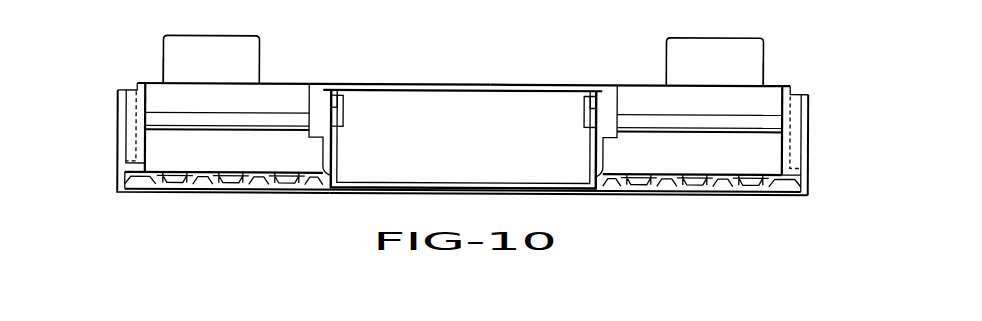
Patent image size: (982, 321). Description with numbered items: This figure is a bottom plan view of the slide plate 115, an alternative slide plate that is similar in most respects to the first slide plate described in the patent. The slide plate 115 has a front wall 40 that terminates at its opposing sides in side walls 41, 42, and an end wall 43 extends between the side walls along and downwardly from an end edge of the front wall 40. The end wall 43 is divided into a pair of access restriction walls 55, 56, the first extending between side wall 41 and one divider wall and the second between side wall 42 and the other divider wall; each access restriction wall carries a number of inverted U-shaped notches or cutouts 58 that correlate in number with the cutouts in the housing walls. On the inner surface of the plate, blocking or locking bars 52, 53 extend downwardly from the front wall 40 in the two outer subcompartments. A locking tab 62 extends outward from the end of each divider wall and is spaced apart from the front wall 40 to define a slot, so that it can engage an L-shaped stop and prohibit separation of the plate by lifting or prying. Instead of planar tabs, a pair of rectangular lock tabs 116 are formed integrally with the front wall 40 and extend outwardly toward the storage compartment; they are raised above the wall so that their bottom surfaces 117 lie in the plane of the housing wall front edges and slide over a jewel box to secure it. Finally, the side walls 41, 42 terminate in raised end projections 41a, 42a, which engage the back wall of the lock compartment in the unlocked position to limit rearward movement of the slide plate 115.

The front wall 40 is at (548, 170).
The side wall 41 is at (118, 143).
The raised end projection 41a is at (118, 97).
The side wall 42 is at (808, 137).
The raised end projection 42a is at (808, 100).
The end wall 43 is at (361, 200).
The blocking or locking bar 52 is at (285, 123).
The blocking or locking bar 53 is at (643, 125).
The access restriction wall 55 is at (255, 182).
The access restriction wall 56 is at (672, 182).
The inverted U-shaped notches or cutouts 58 is at (228, 185).
The locking tab 62 is at (333, 115).
The slide plate 115 is at (153, 196).
The lock tab 116 is at (165, 65).
The bottom surface 117 is at (190, 50).